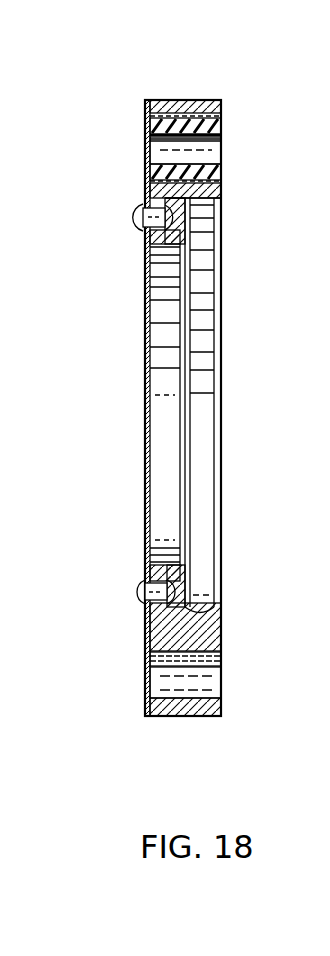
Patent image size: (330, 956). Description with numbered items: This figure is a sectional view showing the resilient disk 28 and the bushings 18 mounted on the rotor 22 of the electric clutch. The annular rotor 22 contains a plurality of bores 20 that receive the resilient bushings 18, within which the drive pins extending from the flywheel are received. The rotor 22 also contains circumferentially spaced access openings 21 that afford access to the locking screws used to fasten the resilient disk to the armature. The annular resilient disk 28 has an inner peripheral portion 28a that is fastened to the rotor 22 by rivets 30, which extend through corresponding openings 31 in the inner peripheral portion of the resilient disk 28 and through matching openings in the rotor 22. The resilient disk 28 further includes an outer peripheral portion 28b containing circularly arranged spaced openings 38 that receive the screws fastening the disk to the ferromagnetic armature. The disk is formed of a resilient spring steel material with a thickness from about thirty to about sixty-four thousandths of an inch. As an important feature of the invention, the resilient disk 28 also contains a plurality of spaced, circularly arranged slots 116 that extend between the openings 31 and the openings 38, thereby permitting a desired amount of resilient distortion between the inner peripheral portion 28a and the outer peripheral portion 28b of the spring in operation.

The resilient bushing 18 is at (221, 123).
The bore 20 is at (221, 150).
The access opening 21 is at (205, 676).
The rotor 22 is at (224, 111).
The resilient disk 28 is at (140, 716).
The inner peripheral portion 28a is at (143, 230).
The outer peripheral portion 28b is at (143, 106).
The rivet 30 is at (224, 207).
The opening 31 is at (148, 267).
The opening 38 is at (146, 661).
The slot 116 is at (147, 190).